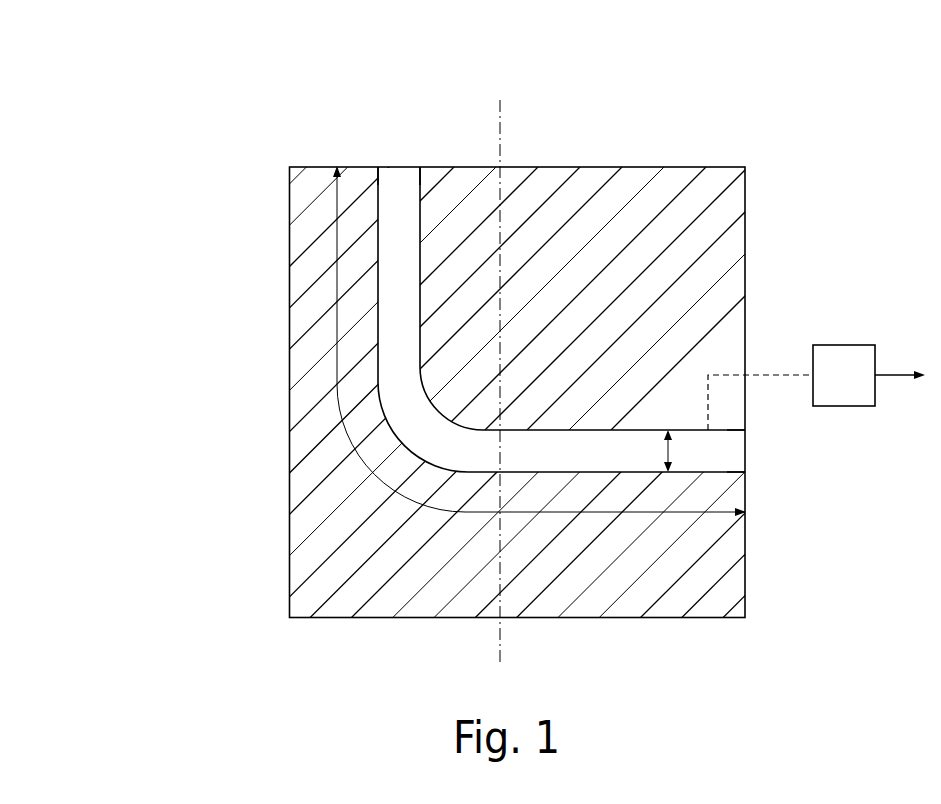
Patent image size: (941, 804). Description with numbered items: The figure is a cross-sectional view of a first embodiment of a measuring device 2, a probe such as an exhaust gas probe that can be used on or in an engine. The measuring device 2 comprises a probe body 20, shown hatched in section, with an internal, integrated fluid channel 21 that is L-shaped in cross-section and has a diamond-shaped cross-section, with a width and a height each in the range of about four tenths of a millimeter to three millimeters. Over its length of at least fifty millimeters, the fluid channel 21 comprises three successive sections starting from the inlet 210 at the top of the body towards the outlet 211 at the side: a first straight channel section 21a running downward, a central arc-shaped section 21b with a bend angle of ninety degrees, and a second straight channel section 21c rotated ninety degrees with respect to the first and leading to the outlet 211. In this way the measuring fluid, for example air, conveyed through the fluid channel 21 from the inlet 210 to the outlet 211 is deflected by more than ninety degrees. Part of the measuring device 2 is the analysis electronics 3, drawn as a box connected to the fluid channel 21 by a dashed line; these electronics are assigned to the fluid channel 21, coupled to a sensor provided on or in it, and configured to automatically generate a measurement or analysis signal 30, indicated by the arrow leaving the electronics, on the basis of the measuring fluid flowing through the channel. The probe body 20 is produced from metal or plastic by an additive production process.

The measuring device 2 is at (470, 382).
The probe body 20 is at (722, 250).
The fluid channel 21 is at (528, 382).
The channel section 21a is at (390, 245).
The arc-shaped section 21b is at (413, 438).
The channel section 21c is at (616, 458).
The inlet 210 is at (403, 167).
The outlet 211 is at (745, 455).
The analysis electronics 3 is at (791, 387).
The measurement or analysis signal 30 is at (893, 375).